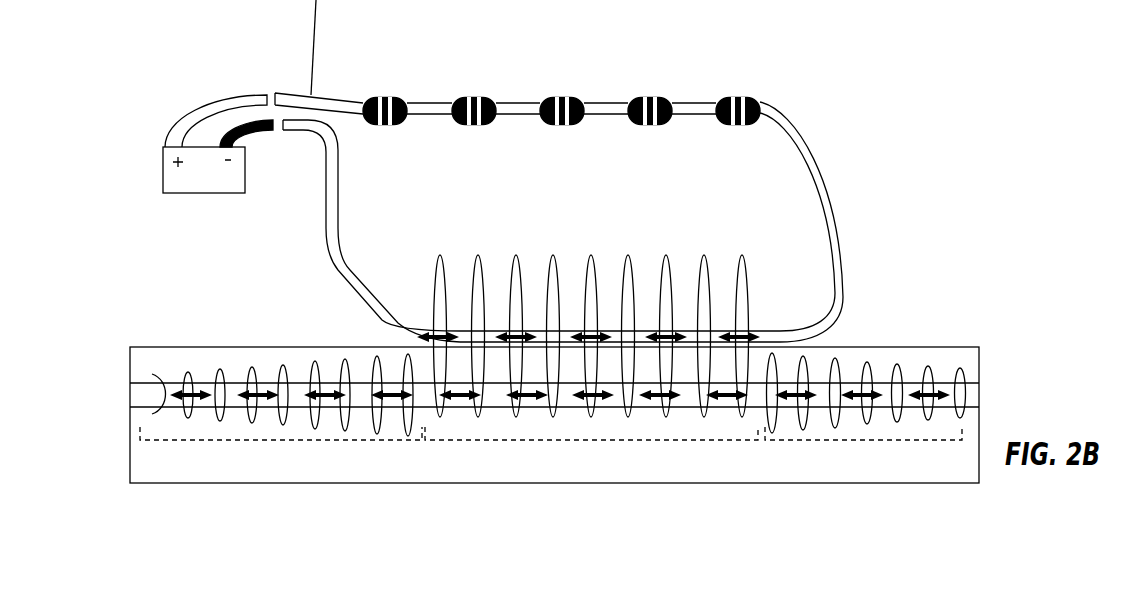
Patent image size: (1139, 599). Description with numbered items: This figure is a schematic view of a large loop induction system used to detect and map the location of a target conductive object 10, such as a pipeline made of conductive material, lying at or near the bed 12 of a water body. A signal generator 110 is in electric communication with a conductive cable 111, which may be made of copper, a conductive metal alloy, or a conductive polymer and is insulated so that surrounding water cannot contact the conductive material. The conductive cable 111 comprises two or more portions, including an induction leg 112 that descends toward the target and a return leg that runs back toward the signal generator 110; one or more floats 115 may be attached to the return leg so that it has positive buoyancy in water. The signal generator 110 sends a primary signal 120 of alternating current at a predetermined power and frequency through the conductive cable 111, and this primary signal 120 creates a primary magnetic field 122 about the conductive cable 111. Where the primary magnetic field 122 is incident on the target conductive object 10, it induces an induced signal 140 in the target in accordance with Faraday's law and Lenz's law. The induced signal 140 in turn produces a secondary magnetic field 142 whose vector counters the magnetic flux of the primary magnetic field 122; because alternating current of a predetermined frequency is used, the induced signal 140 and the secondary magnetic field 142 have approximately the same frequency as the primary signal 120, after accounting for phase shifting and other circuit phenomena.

The target conductive object 10 is at (150, 374).
The bed 12 is at (185, 347).
The signal generator 110 is at (163, 167).
The conductive cable 111 is at (787, 119).
The induction leg 112 is at (325, 236).
The floats 115 is at (388, 98).
The primary signal 120 is at (435, 333).
The primary magnetic field 122 is at (630, 256).
The induced signal 140 is at (863, 400).
The secondary magnetic field 142 is at (250, 443).